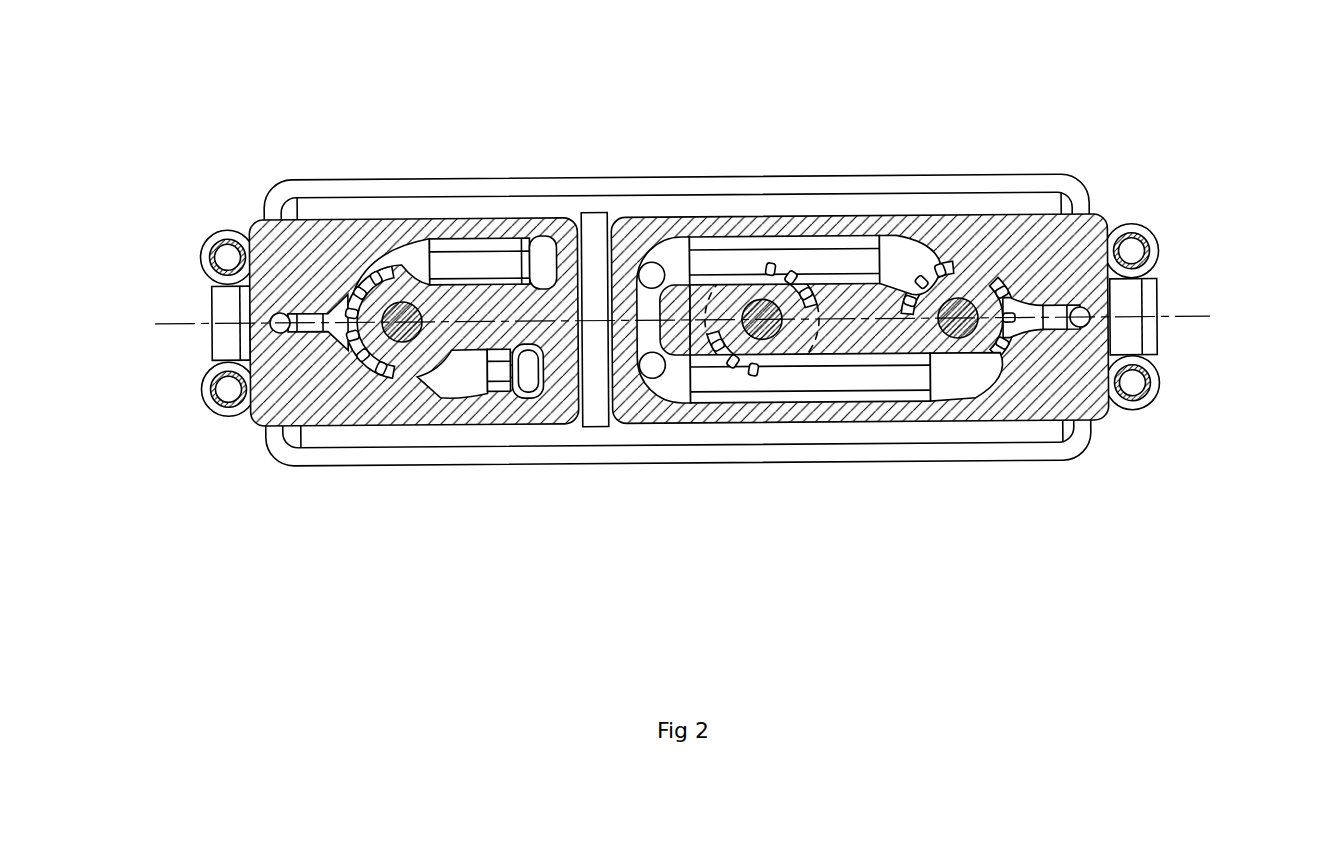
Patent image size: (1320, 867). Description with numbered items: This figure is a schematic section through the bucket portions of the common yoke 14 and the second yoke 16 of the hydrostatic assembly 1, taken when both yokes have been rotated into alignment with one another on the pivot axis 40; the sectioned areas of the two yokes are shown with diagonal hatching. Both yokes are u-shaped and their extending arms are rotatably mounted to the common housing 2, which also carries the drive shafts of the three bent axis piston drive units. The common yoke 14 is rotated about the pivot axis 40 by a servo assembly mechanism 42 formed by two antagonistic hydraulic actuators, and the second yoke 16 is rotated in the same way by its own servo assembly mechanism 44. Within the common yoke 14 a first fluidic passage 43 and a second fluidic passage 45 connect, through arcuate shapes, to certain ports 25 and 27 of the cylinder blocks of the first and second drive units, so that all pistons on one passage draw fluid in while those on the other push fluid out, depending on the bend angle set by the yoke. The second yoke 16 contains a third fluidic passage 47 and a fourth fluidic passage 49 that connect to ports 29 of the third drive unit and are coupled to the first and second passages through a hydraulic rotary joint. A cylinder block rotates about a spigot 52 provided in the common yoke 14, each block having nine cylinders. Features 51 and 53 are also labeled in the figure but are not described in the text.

The hydrostatic assembly 1 is at (1026, 578).
The common housing 2 is at (797, 465).
The common yoke 14 is at (942, 218).
The second yoke 16 is at (368, 227).
The port 25 is at (812, 297).
The port 27 is at (1060, 420).
The port 29 is at (277, 427).
The pivot axis 40 is at (972, 300).
The servo assembly mechanism 42 is at (1150, 238).
The first fluidic passage 43 is at (920, 380).
The servo assembly mechanism 44 is at (208, 243).
The second fluidic passage 45 is at (857, 263).
The third fluidic passage 47 is at (470, 372).
The fourth fluidic passage 49 is at (452, 252).
The right bore 51 is at (1090, 325).
The spigot 52 is at (930, 352).
The left bore 53 is at (277, 317).